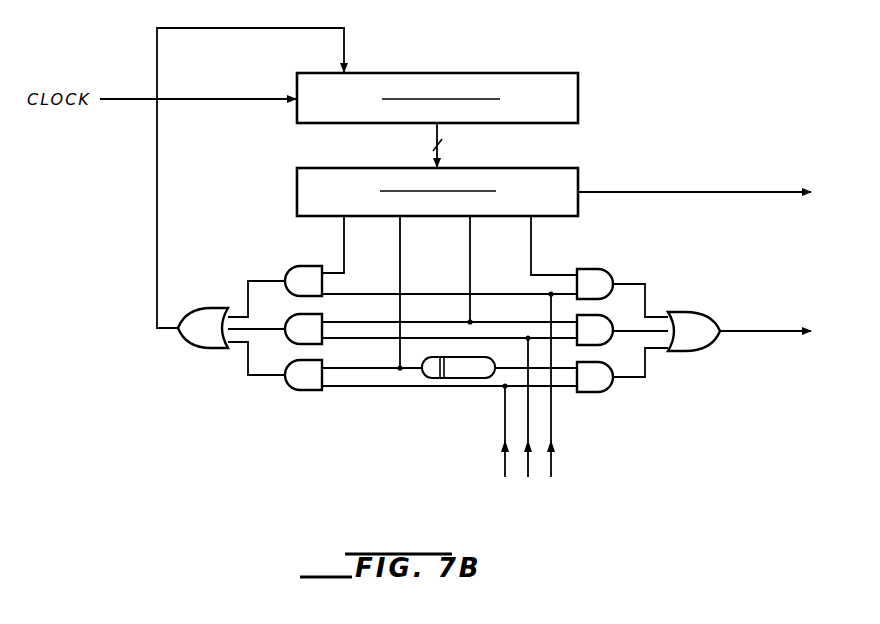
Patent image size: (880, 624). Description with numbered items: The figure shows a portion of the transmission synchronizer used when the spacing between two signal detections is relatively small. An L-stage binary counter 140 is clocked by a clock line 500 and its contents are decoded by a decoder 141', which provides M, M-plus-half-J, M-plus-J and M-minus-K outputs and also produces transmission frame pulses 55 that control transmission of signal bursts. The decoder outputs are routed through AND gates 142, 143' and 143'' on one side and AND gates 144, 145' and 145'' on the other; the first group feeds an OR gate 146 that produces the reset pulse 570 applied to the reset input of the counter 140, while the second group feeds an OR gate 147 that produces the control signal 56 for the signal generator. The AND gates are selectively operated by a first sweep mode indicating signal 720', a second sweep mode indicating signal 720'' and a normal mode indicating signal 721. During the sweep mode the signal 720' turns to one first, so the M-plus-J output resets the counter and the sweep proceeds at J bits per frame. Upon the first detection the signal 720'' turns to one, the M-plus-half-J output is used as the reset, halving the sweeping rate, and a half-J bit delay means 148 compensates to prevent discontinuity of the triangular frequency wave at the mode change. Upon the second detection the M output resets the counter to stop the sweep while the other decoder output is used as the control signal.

The L-stage binary counter 140 is at (497, 57).
The decoder 141' is at (402, 192).
The AND gate 142 is at (308, 246).
The AND gate 143' is at (303, 321).
The AND gate 143'' is at (275, 389).
The AND gate 144 is at (602, 270).
The AND gate 145' is at (622, 317).
The AND gate 145'' is at (622, 392).
The OR gate 146 is at (207, 351).
The OR gate 147 is at (690, 353).
The (J/2) bit delay means 148 is at (422, 378).
The clock input line 500 is at (230, 84).
The reset pulse 570 is at (157, 212).
The transmission frame pulses 55 is at (727, 174).
The control signal 56 is at (787, 317).
The sweep mode indicating signal 720' is at (489, 407).
The sweep mode indicating signal 720'' is at (471, 432).
The normal mode indicating signal 721 is at (552, 466).